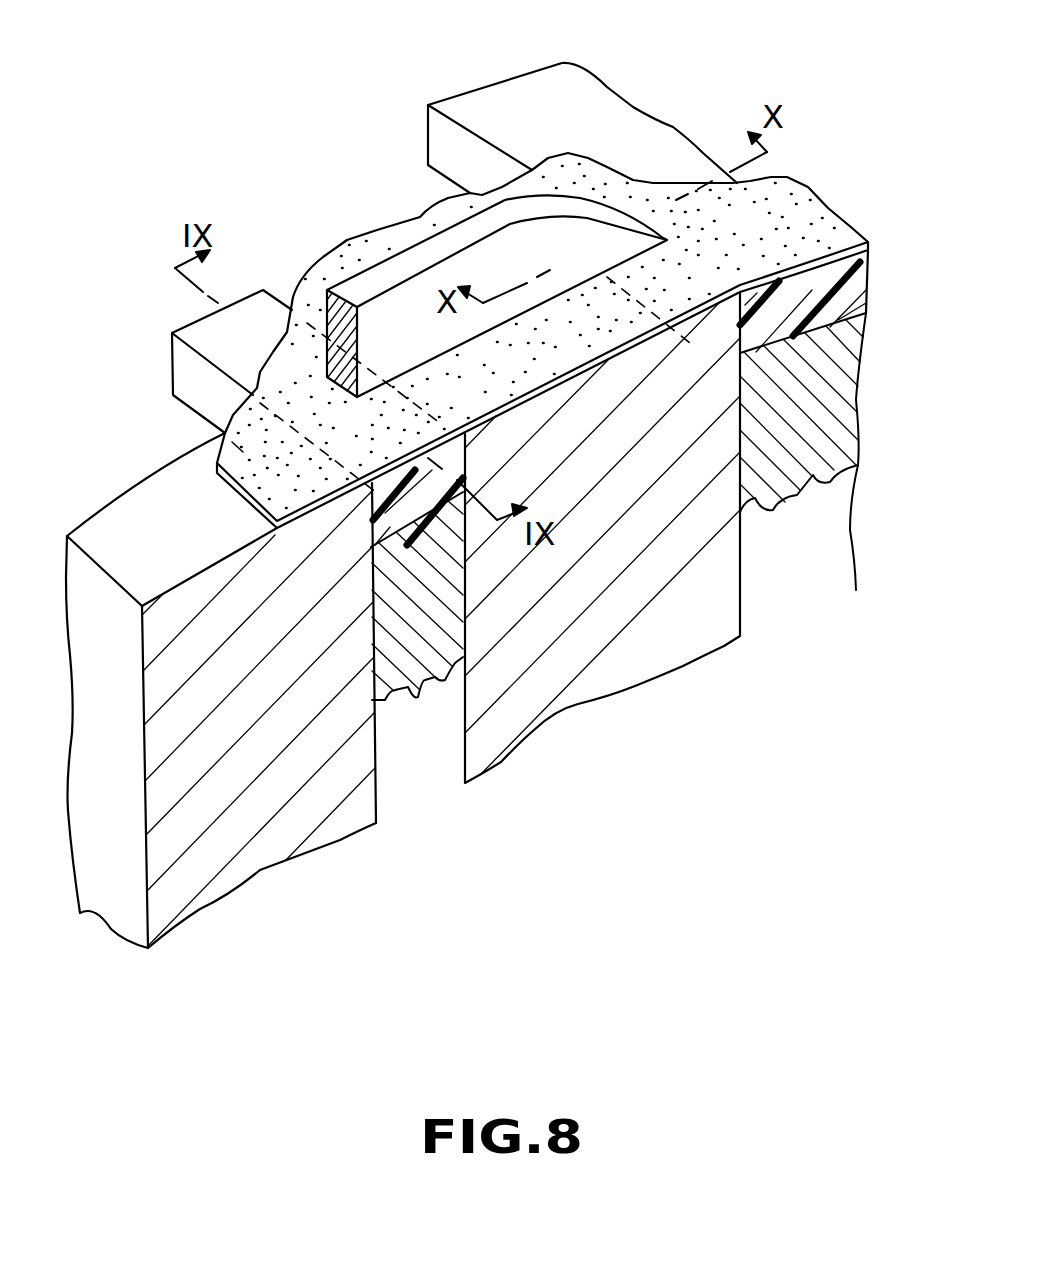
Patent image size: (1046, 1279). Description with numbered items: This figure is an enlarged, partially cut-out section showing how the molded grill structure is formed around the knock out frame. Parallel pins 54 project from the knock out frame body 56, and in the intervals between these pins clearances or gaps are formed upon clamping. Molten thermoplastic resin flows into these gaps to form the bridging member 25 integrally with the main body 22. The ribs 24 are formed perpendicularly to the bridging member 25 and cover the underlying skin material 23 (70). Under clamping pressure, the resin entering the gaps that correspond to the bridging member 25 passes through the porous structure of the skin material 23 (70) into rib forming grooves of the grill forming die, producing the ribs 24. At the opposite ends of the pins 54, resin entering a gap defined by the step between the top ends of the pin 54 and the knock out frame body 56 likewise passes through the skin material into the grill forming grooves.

The main body 22 is at (575, 92).
The skin material 23 is at (573, 334).
The skin material 70 is at (791, 216).
The rib 24 is at (387, 270).
The bridging member 25 is at (188, 363).
The pin 54 is at (268, 838).
The knock out frame body 56 is at (425, 654).